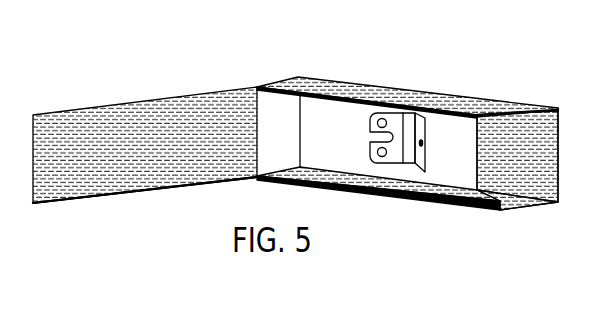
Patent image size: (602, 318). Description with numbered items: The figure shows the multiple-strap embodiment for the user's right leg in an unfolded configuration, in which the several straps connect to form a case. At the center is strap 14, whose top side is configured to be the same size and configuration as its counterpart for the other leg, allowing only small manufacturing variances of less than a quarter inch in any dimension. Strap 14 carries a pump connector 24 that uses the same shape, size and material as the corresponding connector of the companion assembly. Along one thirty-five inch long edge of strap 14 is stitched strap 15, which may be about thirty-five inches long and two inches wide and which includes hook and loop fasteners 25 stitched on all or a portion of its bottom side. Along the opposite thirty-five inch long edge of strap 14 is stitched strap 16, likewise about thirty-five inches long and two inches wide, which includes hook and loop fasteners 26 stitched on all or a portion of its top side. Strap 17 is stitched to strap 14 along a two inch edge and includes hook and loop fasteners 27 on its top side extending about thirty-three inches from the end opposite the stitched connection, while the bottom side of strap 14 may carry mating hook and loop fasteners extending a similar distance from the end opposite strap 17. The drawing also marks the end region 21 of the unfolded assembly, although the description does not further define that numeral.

The strap 14 is at (458, 137).
The strap 15 is at (332, 92).
The strap 16 is at (387, 210).
The strap 17 is at (173, 172).
The end section 21 is at (571, 111).
The pump connector 24 is at (423, 165).
The hook and loop fasteners 25 is at (447, 102).
The hook and loop fasteners 26 is at (507, 197).
The hook and loop fasteners 27 is at (143, 128).